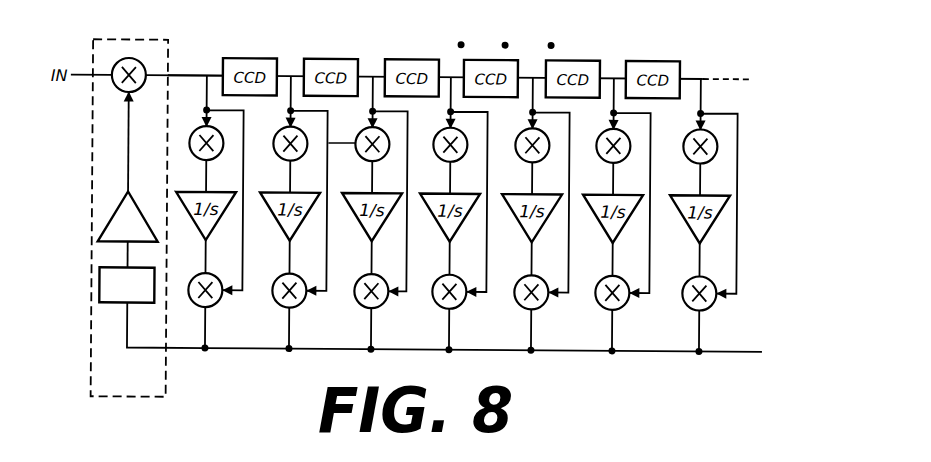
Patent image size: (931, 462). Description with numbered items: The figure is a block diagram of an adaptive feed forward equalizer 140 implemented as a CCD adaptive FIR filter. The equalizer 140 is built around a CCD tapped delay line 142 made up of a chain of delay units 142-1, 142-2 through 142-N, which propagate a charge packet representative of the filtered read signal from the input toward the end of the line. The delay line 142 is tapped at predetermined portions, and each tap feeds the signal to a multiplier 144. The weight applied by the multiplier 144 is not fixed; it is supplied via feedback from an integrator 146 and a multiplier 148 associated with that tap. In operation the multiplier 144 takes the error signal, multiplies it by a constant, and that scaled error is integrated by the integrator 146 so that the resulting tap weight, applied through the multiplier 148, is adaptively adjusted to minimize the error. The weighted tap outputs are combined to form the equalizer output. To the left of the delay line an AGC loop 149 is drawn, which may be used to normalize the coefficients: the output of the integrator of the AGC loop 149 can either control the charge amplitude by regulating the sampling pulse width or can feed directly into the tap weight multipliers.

The adaptive feed forward equalizer 140 is at (752, 195).
The CCD tapped delay line 142 is at (184, 74).
The delay unit 142-1 is at (246, 58).
The delay unit 142-2 is at (328, 58).
The delay unit 142-N is at (653, 58).
The multiplier 144 is at (359, 156).
The integrator 146 is at (367, 225).
The multiplier 148 is at (385, 305).
The AGC loop 149 is at (92, 313).